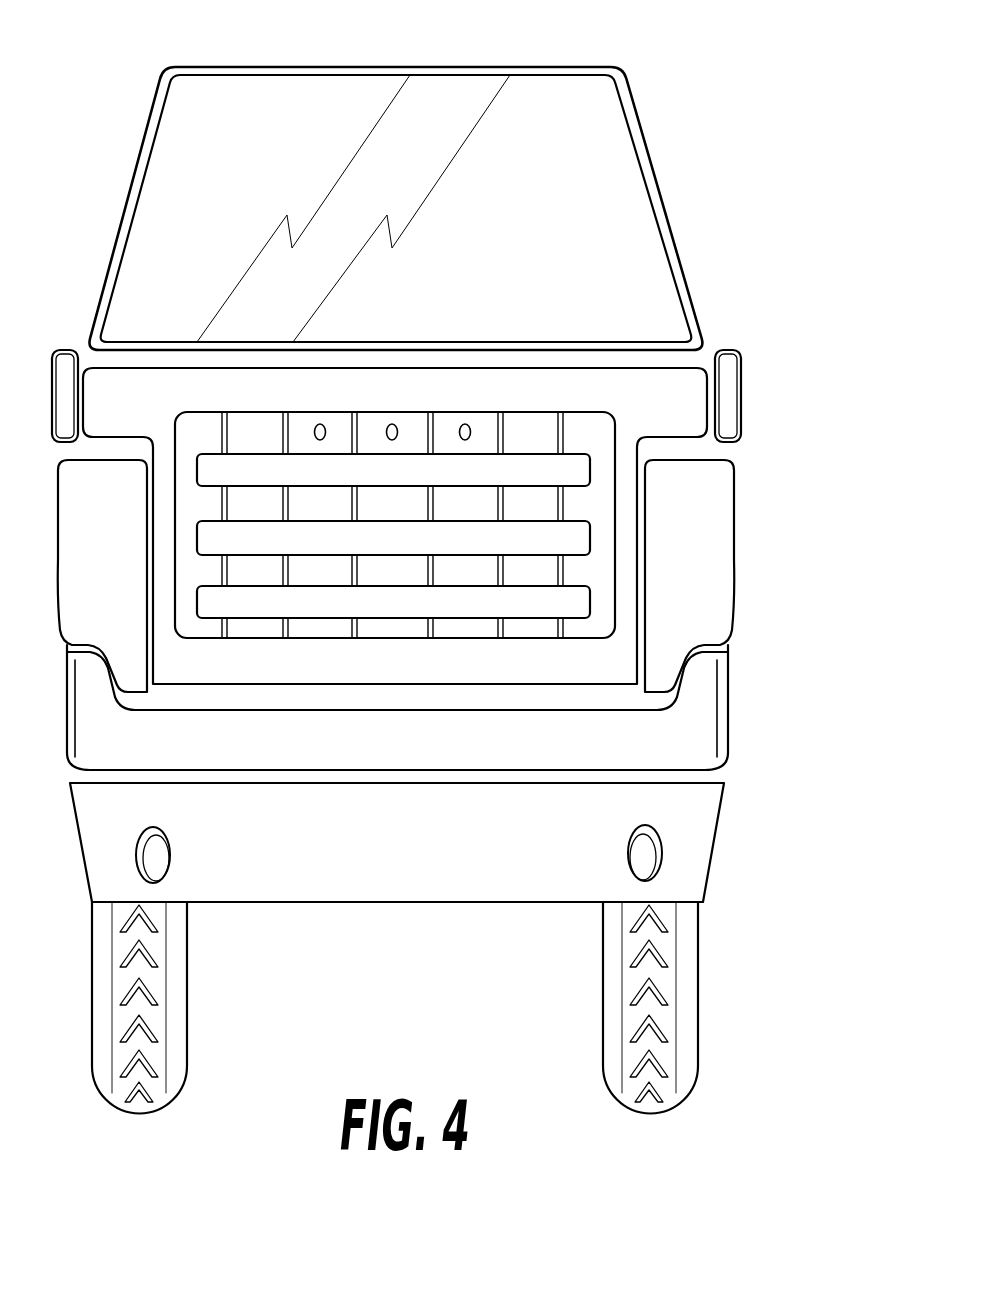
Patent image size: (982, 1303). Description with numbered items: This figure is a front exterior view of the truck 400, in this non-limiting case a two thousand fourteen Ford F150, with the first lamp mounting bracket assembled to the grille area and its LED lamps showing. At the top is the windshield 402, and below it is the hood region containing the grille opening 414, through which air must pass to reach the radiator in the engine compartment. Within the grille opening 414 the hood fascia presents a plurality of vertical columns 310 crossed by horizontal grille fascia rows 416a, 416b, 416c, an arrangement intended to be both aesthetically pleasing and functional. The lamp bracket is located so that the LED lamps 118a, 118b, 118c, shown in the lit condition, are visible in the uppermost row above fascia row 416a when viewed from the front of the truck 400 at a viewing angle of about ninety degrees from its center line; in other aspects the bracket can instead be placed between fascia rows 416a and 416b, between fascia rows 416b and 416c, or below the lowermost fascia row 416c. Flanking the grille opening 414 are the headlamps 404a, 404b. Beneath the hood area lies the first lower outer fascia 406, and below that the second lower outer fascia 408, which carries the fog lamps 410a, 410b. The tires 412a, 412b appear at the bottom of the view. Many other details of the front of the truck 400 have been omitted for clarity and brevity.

The truck 400 is at (769, 213).
The windshield 402 is at (613, 133).
The grille opening 414 is at (612, 414).
The columns 310 is at (222, 430).
The fascia row 416a is at (198, 453).
The fascia row 416b is at (590, 530).
The fascia row 416c is at (583, 619).
The LED lamp 118a is at (465, 422).
The LED lamp 118b is at (392, 422).
The LED lamp 118c is at (320, 422).
The headlamp 404a is at (712, 568).
The headlamp 404b is at (127, 548).
The first lower outer fascia 406 is at (731, 688).
The second lower outer fascia 408 is at (724, 843).
The fog lamp 410a is at (629, 855).
The fog lamp 410b is at (171, 853).
The tire 412a is at (604, 1022).
The tire 412b is at (177, 1029).